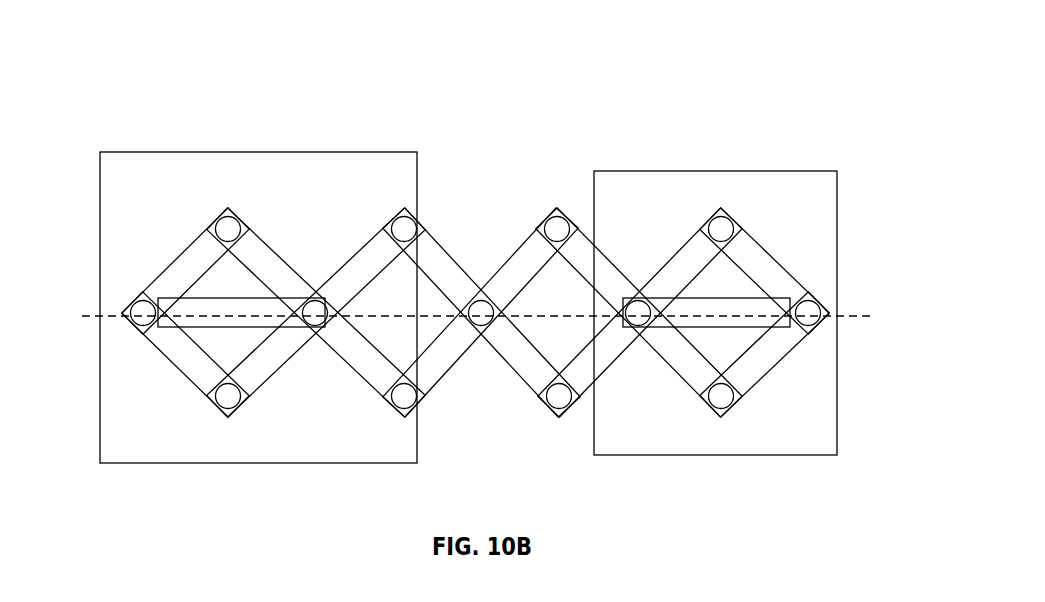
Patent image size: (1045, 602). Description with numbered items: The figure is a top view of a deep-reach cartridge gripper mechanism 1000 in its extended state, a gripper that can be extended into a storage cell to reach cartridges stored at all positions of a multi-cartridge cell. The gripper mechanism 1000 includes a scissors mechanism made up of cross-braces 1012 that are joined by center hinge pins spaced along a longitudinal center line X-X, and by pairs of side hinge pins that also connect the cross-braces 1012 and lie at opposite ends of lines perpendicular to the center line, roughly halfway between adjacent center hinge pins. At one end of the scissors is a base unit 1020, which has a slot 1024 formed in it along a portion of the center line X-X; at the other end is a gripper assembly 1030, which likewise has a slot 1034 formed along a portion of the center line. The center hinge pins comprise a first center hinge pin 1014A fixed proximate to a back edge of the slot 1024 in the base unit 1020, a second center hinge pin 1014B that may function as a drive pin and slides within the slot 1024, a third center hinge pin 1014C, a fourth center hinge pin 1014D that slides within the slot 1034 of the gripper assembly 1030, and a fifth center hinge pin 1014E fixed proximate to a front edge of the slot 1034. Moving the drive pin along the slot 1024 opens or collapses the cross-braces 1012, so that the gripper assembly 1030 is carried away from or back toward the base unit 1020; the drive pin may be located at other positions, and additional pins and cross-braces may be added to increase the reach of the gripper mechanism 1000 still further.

The deep-reach cartridge gripper mechanism 1000 is at (646, 102).
The cross-braces 1012 is at (520, 353).
The first center hinge pin 1014A is at (130, 307).
The second center hinge pin 1014B is at (316, 311).
The third center hinge pin 1014C is at (483, 311).
The fourth center hinge pin 1014D is at (640, 311).
The fifth center hinge pin 1014E is at (810, 308).
The base unit 1020 is at (185, 445).
The slot 1024 is at (202, 317).
The gripper assembly 1030 is at (707, 455).
The slot 1034 is at (735, 325).